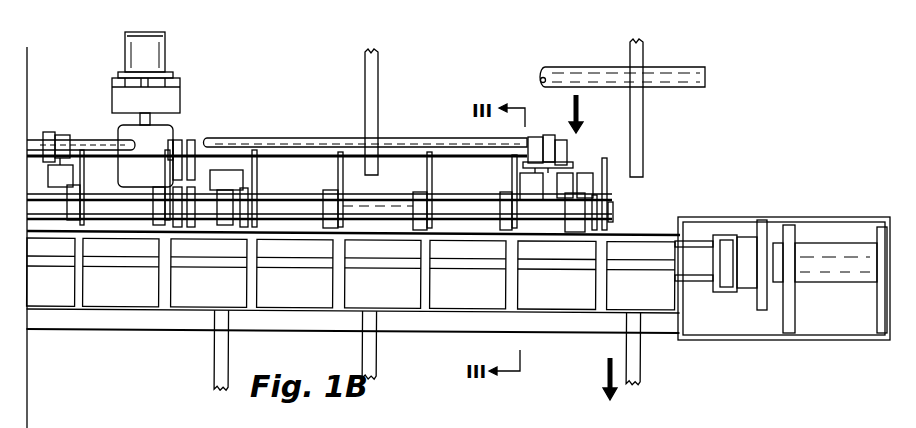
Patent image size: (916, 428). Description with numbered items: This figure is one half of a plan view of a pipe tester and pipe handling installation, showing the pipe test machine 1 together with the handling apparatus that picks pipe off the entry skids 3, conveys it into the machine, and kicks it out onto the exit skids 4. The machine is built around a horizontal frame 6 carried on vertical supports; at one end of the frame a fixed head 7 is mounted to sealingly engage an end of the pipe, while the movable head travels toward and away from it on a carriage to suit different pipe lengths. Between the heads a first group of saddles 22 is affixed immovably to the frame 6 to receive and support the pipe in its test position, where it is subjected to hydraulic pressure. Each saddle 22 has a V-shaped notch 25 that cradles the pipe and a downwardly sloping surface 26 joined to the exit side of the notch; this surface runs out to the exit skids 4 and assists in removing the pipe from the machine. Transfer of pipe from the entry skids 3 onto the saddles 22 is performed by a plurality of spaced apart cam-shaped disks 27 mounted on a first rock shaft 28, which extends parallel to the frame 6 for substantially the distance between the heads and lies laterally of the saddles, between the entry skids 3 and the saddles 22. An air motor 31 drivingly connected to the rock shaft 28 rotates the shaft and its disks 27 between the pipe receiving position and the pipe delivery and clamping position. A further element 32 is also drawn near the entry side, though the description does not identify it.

The pipe test machine 1 is at (742, 345).
The entry skids 3 is at (379, 83).
The exit skids 4 is at (214, 363).
The horizontal frame 6 is at (113, 331).
The fixed head 7 is at (707, 293).
The saddles 22 is at (156, 274).
The V-shaped notch 25 is at (652, 252).
The downwardly sloping surface 26 is at (580, 304).
The disks 27 is at (258, 178).
The first rock shaft 28 is at (386, 186).
The air motor 31 is at (166, 56).
The tube 32 is at (580, 52).